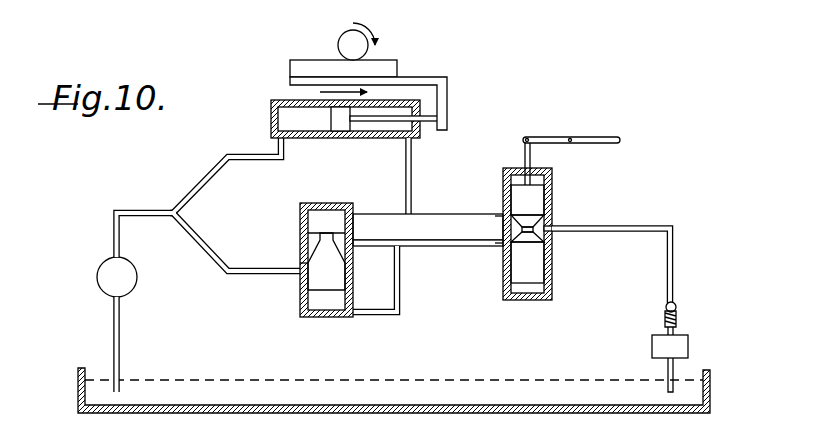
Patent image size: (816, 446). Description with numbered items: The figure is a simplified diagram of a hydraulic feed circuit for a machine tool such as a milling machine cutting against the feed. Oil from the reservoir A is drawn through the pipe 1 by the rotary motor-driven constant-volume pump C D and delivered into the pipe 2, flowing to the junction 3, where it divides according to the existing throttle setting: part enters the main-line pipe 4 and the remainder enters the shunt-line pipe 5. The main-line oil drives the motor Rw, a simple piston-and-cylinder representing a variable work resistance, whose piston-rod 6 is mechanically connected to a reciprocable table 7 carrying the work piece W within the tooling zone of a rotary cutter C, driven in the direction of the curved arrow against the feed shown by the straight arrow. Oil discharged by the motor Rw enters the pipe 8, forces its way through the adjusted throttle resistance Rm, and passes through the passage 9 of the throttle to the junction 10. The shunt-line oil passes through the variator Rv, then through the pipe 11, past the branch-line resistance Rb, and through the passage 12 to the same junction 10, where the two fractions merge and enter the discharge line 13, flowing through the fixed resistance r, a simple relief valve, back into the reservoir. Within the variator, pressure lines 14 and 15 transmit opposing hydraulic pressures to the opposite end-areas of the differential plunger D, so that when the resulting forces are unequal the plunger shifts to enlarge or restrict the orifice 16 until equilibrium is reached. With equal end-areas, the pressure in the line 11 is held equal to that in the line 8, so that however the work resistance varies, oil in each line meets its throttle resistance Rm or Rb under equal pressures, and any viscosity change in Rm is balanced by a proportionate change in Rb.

The pipe 1 is at (121, 338).
The pipe 2 is at (120, 235).
The junction 3 is at (178, 214).
The main-line pipe 4 is at (210, 181).
The shunt-line pipe 5 is at (211, 250).
The piston-rod 6 is at (437, 125).
The reciprocable table 7 is at (428, 78).
The pipe 8 is at (405, 168).
The passage 9 is at (505, 215).
The junction 10 is at (555, 225).
The pipe 11 is at (382, 243).
The passage 12 is at (505, 247).
The discharge line 13 is at (623, 227).
The pressure line 14 is at (380, 212).
The pressure line 15 is at (399, 289).
The orifice 16 is at (300, 273).
The reservoir A is at (78, 392).
The pump CD is at (117, 277).
The work piece W is at (290, 64).
The rotary cutter C is at (356, 41).
The motor Rw is at (352, 148).
The variator Rv is at (300, 243).
The differential plunger D is at (323, 280).
The throttle element Rm is at (561, 218).
The branch-line resistance Rb is at (527, 262).
The fixed resistance r is at (677, 320).